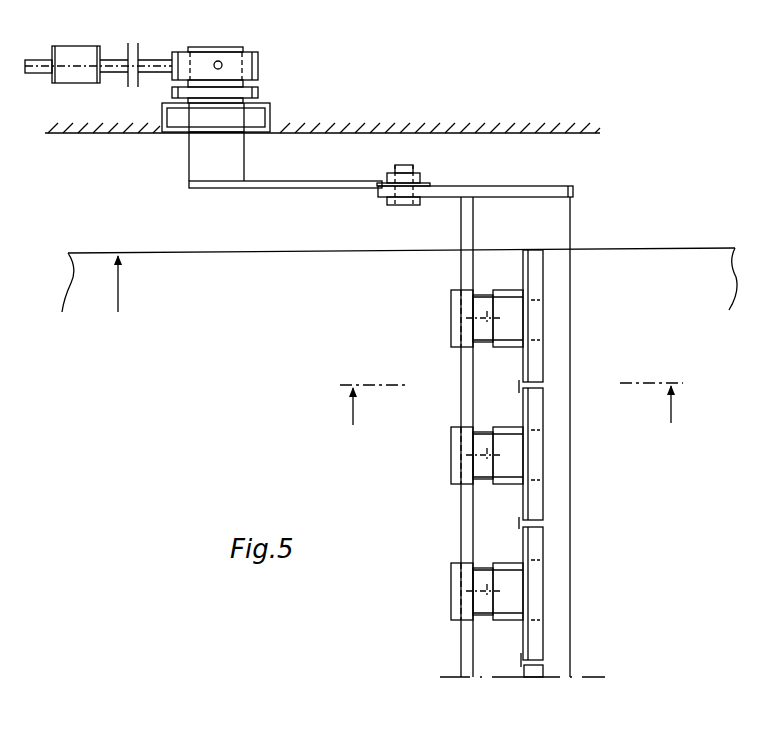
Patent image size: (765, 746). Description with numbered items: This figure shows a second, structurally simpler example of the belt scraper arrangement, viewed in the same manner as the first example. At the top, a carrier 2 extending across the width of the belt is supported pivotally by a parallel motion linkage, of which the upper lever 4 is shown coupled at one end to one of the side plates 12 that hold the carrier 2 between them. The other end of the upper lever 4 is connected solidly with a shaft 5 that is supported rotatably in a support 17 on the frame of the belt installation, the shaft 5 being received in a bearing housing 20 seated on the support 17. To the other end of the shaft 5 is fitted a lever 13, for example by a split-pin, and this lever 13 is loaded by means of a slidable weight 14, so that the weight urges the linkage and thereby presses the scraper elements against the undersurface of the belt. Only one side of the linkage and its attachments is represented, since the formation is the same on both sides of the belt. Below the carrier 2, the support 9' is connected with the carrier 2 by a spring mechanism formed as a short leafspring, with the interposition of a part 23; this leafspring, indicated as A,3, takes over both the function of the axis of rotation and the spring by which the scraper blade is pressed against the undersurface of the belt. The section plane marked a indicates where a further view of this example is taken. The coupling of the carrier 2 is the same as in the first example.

The slidable weight 14 is at (73, 52).
The lever 13 is at (157, 61).
The bearing housing 20 is at (251, 82).
The support 17 is at (273, 111).
The shaft 5 is at (210, 115).
The upper lever 4 is at (294, 189).
The side plate 12 is at (483, 188).
The carrier 2 is at (565, 222).
The support 9' is at (484, 437).
The part 23 is at (450, 307).
The axis of rotation and spring mechanism A,3 is at (486, 318).
The section plane a is at (510, 404).